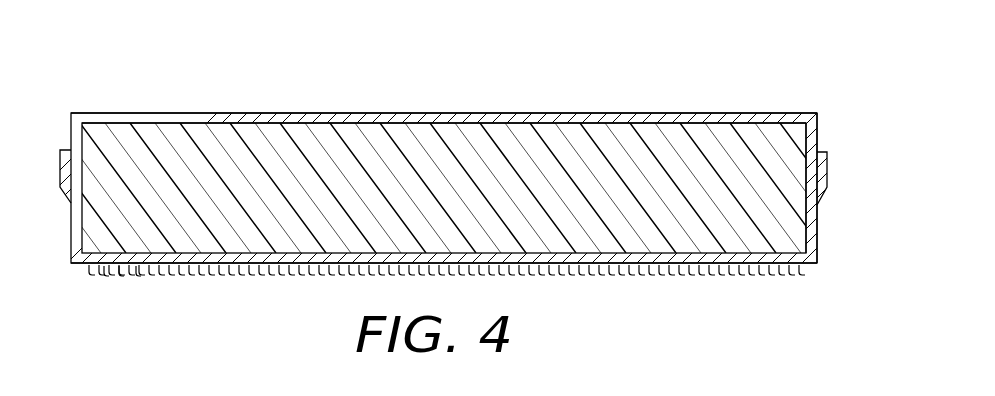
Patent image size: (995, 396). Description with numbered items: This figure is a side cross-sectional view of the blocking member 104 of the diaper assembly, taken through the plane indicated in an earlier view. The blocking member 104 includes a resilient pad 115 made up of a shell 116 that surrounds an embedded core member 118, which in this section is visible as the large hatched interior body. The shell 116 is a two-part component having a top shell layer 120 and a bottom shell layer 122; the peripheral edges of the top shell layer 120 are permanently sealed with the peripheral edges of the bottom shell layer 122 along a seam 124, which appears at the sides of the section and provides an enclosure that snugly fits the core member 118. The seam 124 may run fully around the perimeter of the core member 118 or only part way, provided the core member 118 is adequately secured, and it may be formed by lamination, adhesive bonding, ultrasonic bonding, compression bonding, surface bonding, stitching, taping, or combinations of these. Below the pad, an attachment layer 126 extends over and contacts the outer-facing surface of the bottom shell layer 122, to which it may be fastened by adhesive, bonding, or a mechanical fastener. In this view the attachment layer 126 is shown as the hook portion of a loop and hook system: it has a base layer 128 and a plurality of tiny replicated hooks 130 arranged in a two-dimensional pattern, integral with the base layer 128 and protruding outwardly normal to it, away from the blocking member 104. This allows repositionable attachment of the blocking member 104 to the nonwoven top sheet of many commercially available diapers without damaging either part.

The blocking member 104 is at (760, 68).
The resilient pad 115 is at (238, 100).
The shell 116 is at (800, 104).
The core member 118 is at (455, 176).
The top shell layer 120 is at (650, 115).
The bottom shell layer 122 is at (815, 237).
The seam 124 is at (826, 165).
The attachment layer 126 is at (803, 268).
The base layer 128 is at (85, 265).
The hooks 130 is at (137, 276).